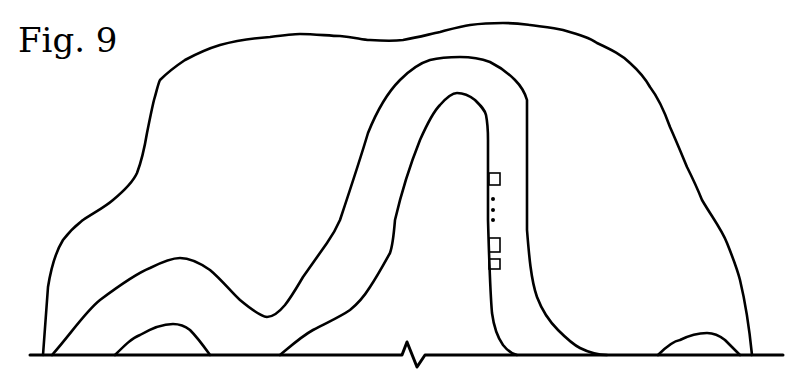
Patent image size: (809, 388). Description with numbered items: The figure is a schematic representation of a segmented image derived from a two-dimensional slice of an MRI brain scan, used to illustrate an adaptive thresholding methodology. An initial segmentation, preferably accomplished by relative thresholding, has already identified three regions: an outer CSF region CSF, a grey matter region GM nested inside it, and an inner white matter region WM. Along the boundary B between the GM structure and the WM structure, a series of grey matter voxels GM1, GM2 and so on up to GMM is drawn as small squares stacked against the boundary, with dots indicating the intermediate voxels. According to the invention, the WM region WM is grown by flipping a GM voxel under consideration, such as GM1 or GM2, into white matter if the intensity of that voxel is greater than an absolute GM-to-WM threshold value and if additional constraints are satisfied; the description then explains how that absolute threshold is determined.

The CSF region CSF is at (307, 176).
The GM region GM is at (378, 257).
The WM region WM is at (460, 319).
The boundary B is at (488, 229).
The GM voxel GMM is at (500, 178).
The GM voxel GM2 is at (497, 254).
The GM voxel GM1 is at (497, 263).